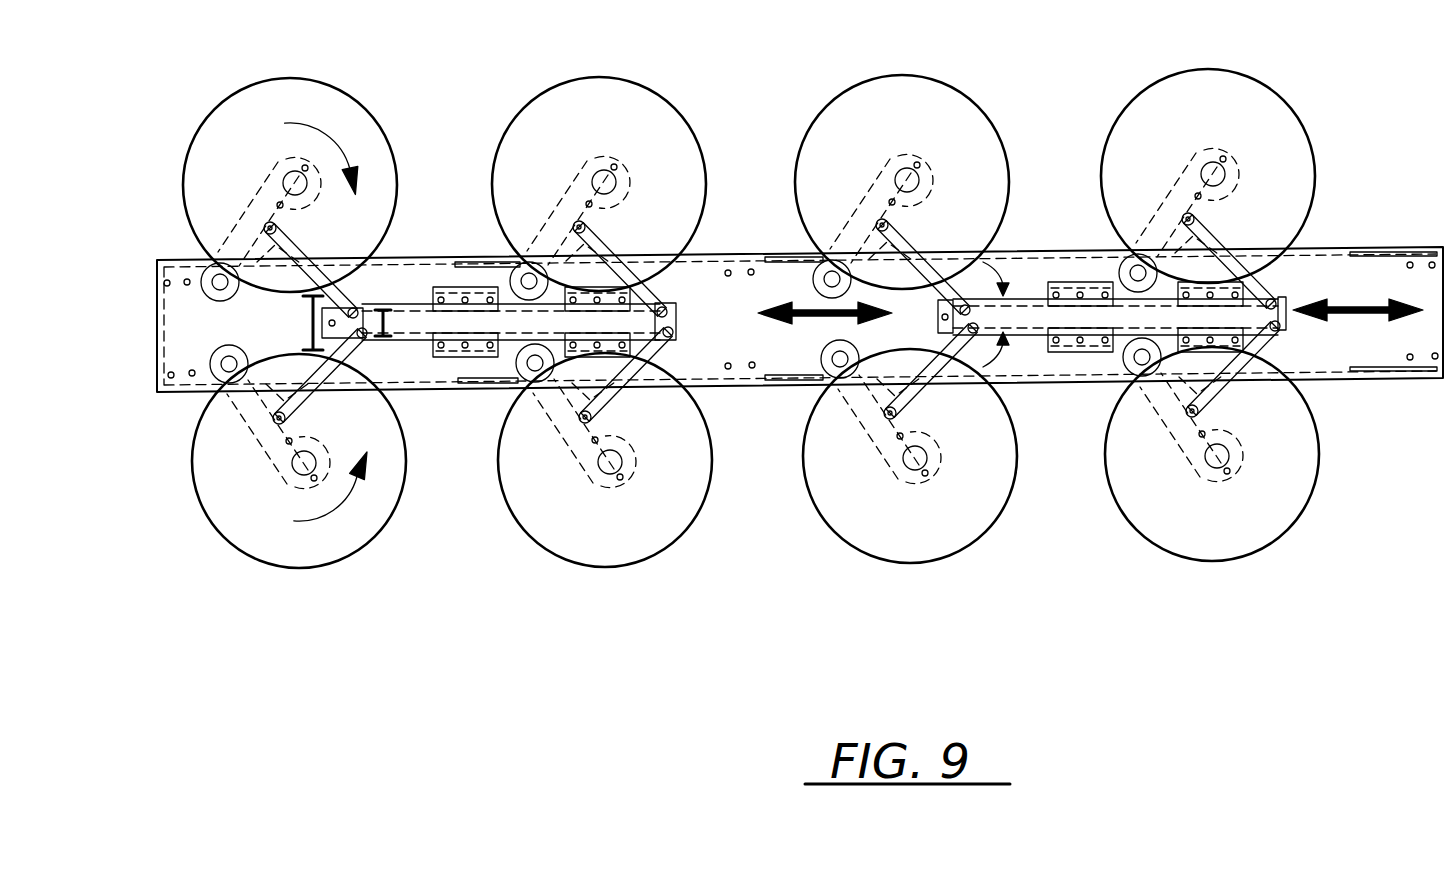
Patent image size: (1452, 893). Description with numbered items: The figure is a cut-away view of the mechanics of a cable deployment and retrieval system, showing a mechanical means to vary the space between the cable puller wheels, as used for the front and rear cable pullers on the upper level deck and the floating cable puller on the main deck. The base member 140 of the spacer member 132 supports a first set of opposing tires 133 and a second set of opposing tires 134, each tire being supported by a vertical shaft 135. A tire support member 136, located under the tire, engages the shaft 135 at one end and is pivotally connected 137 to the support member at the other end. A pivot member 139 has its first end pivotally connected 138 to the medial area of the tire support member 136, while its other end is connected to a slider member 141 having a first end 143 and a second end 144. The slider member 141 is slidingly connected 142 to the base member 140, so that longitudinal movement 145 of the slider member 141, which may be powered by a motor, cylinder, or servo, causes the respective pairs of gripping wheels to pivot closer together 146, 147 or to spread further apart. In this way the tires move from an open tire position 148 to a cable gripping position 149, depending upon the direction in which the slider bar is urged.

The spacer member 132 is at (157, 335).
The first set of opposing tires 133 is at (571, 177).
The second set of opposing tires 134 is at (610, 540).
The vertical shaft 135 is at (632, 164).
The tire support member 136 is at (573, 195).
The pivotal connection 137 is at (492, 249).
The pivotal connection 138 is at (631, 203).
The pivot member 139 is at (634, 265).
The base member 140 is at (790, 368).
The slider member 141 is at (418, 330).
The sliding connection 142 is at (470, 352).
The first end of slider member 143 is at (317, 337).
The second end of slider member 144 is at (675, 328).
The longitudinal movement 145 is at (1090, 322).
The pivoting closer together 146 is at (321, 150).
The pivoting closer together 147 is at (325, 499).
The open tire position 148 is at (310, 318).
The cable gripping position 149 is at (370, 322).